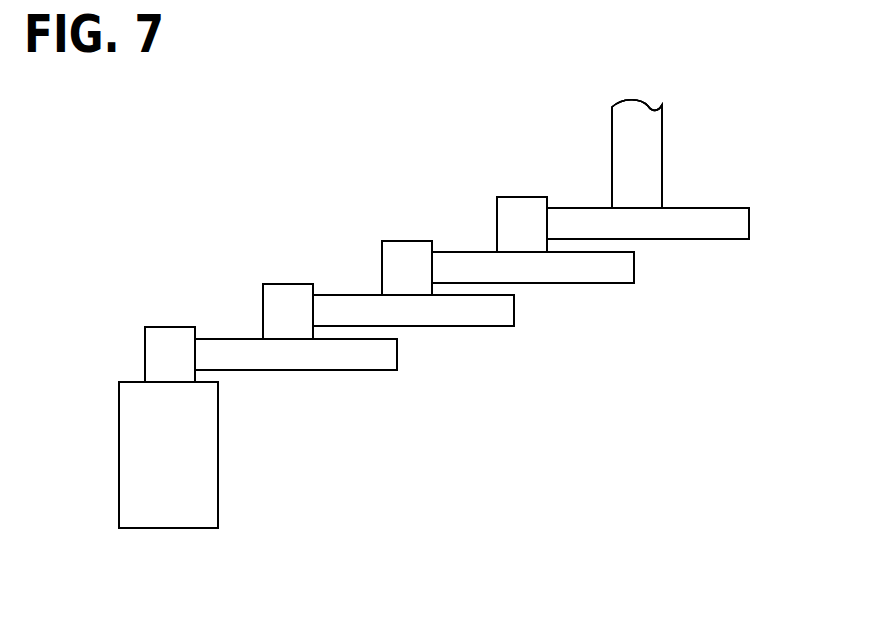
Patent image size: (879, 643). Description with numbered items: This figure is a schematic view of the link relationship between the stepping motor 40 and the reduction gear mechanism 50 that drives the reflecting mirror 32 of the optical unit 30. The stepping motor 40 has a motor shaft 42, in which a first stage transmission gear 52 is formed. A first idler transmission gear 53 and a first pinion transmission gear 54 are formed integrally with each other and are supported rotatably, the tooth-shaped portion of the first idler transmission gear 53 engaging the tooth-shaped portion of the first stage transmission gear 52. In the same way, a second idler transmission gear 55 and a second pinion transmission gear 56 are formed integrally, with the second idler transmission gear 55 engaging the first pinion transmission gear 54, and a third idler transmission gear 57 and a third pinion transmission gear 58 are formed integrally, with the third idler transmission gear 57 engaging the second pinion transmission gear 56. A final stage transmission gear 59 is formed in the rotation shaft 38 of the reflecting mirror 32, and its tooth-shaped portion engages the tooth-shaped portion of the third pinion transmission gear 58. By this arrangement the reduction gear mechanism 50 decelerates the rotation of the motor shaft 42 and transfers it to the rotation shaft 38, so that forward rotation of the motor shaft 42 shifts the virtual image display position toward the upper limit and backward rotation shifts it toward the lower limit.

The optical unit 30 is at (662, 105).
The reflecting mirror 32 is at (647, 144).
The rotation shaft 38 is at (637, 154).
The stepping motor 40 is at (113, 519).
The motor shaft 42 is at (167, 373).
The reduction gear mechanism 50 is at (753, 198).
The first stage transmission gear 52 is at (187, 355).
The first idler transmission gear 53 is at (245, 358).
The first pinion transmission gear 54 is at (303, 317).
The second idler transmission gear 55 is at (340, 303).
The second pinion transmission gear 56 is at (402, 252).
The third idler transmission gear 57 is at (490, 267).
The third pinion transmission gear 58 is at (542, 225).
The final stage transmission gear 59 is at (575, 220).